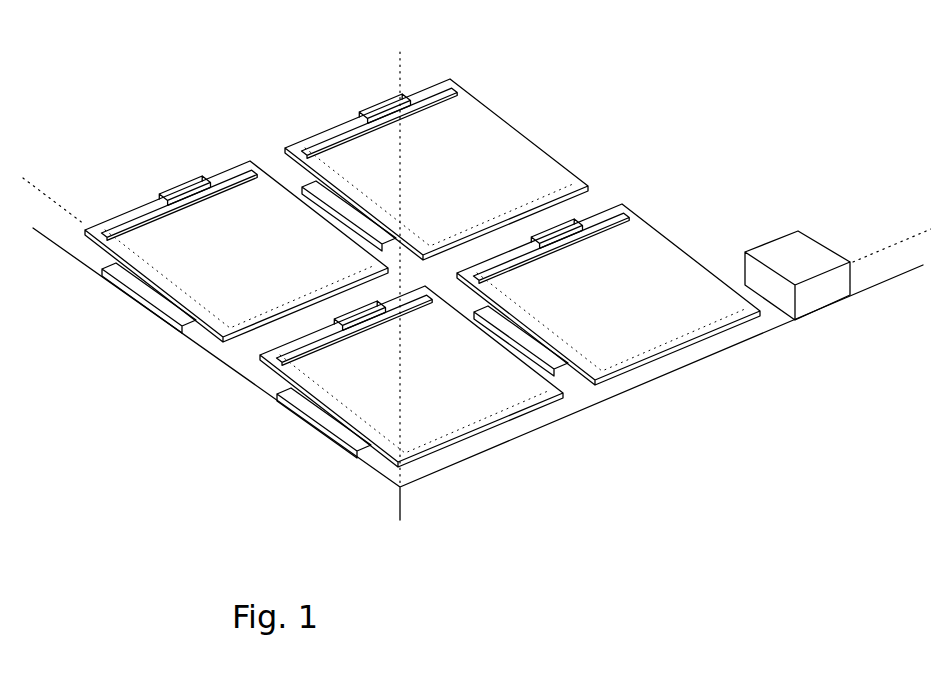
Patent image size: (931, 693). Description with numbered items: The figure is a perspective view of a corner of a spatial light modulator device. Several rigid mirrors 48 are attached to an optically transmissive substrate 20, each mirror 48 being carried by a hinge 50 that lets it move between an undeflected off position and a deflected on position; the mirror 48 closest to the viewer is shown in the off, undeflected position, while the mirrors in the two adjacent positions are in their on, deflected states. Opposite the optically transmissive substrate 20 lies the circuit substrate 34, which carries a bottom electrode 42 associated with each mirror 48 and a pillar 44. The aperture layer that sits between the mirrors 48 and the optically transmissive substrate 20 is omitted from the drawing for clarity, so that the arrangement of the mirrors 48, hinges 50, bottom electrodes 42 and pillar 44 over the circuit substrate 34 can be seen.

The optically transmissive substrate 20 is at (391, 60).
The circuit substrate 34 is at (643, 438).
The bottom electrode 42 is at (151, 309).
The pillar 44 is at (828, 300).
The mirror 48 is at (240, 345).
The hinge 50 is at (127, 218).